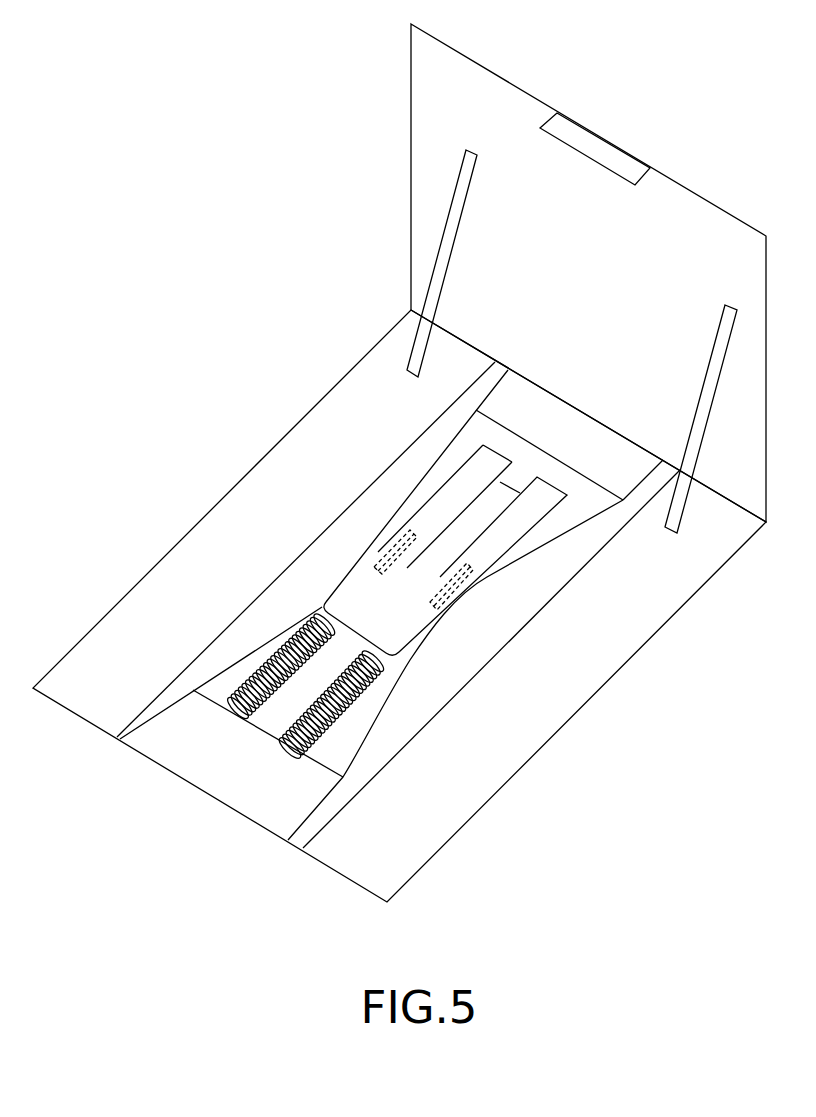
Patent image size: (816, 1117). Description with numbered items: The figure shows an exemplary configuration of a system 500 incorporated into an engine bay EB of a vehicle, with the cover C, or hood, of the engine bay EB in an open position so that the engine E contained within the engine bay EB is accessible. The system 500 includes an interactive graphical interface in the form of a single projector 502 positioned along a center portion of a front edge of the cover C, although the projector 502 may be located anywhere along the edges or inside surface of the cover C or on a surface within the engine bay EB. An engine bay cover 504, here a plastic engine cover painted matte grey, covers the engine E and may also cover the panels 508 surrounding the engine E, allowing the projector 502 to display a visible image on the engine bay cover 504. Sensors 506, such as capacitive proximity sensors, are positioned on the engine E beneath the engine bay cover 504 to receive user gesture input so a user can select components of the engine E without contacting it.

The system 500 is at (263, 230).
The projector 502 is at (597, 148).
The engine bay cover 504 is at (353, 590).
The sensors 506 is at (407, 547).
The panels 508 is at (433, 687).
The cover C is at (707, 201).
The engine E is at (393, 836).
The engine bay EB is at (583, 740).